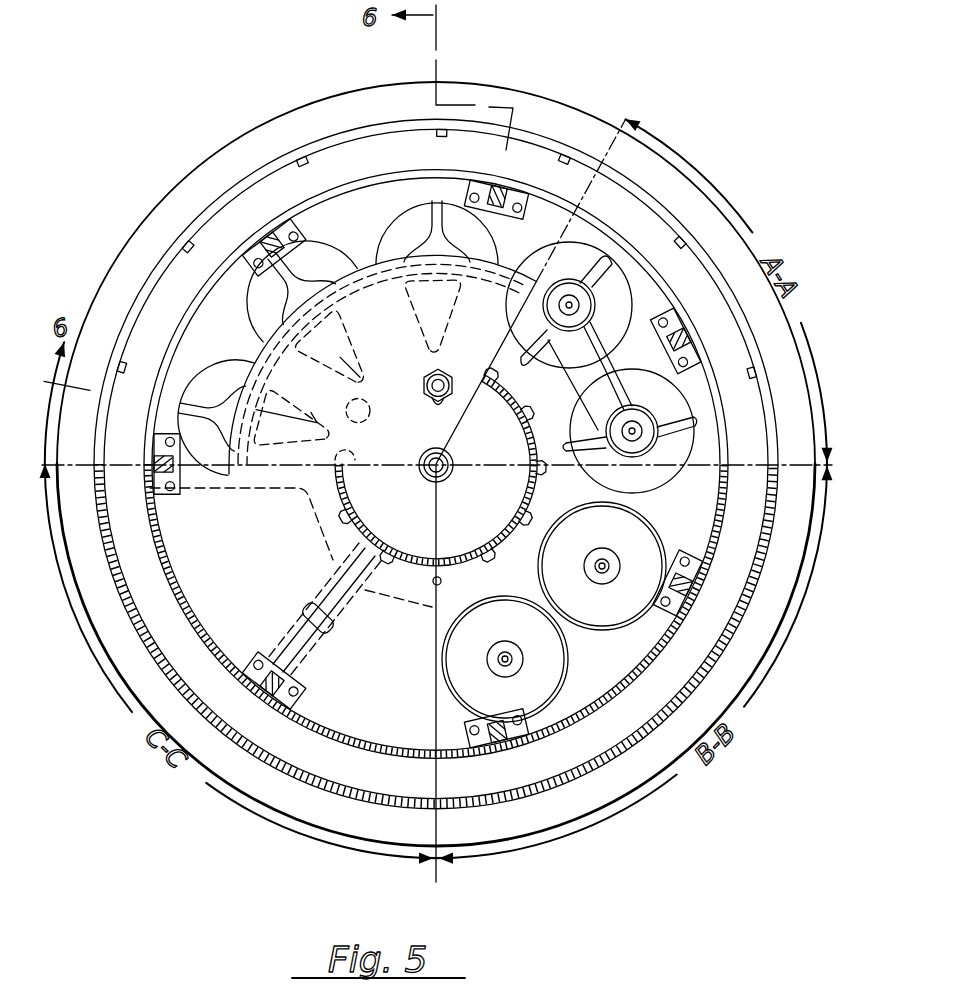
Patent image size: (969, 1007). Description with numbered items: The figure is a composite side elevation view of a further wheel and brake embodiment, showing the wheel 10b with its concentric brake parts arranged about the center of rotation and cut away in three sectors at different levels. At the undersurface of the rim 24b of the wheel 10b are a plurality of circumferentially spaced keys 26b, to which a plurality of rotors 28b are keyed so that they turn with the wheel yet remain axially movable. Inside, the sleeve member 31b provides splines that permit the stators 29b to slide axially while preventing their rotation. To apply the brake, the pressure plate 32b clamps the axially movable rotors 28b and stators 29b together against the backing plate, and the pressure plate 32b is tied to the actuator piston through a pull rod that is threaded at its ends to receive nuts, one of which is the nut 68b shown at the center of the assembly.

The wheel 10b is at (508, 78).
The rim 24b is at (222, 163).
The keys 26b is at (271, 243).
The rotors 28b is at (227, 612).
The stators 29b is at (607, 669).
The sleeve member 31b is at (452, 562).
The pressure plate 32b is at (390, 262).
The nut 68b is at (452, 460).